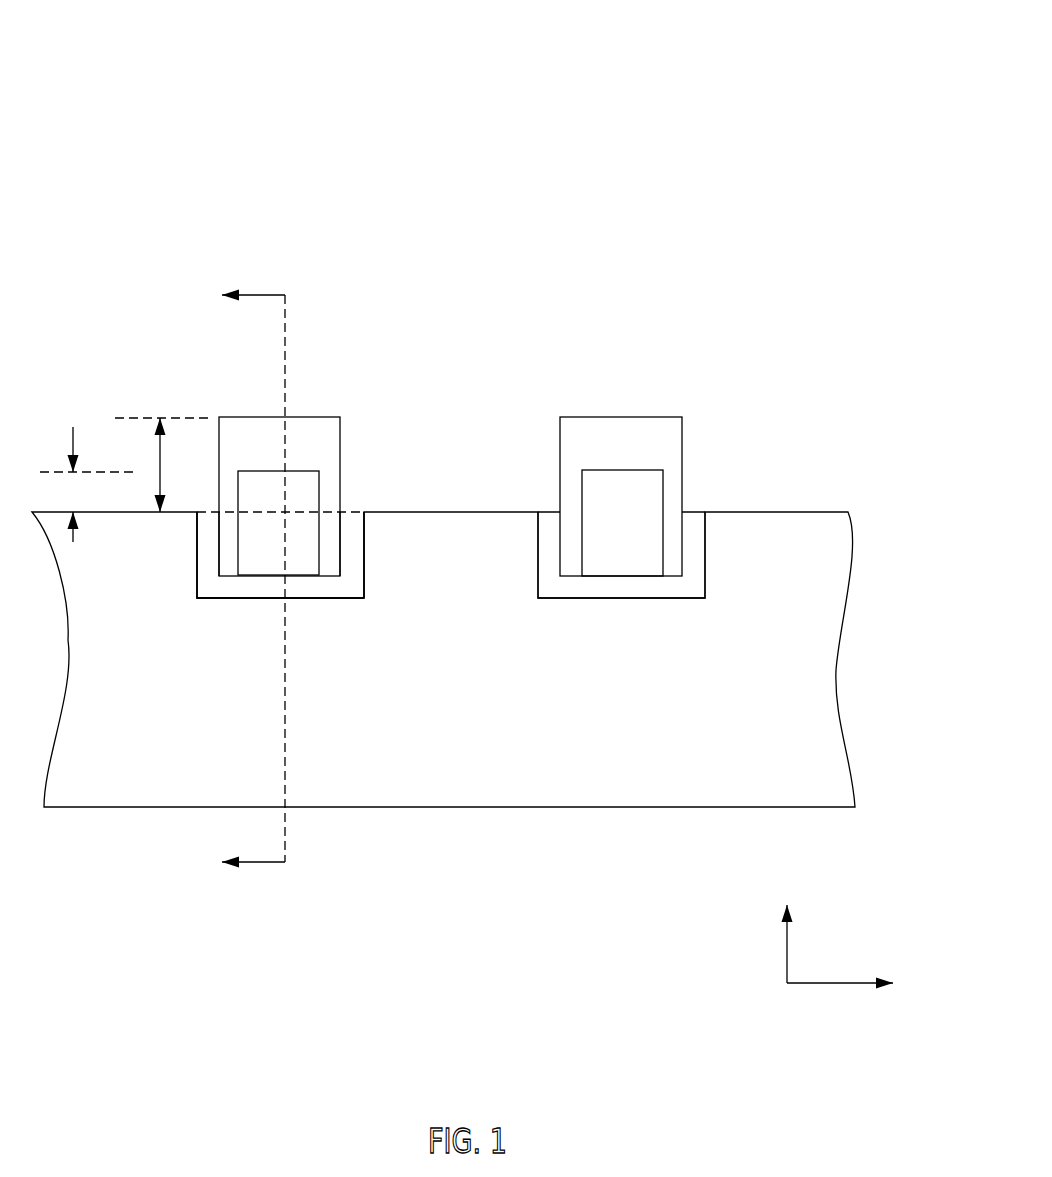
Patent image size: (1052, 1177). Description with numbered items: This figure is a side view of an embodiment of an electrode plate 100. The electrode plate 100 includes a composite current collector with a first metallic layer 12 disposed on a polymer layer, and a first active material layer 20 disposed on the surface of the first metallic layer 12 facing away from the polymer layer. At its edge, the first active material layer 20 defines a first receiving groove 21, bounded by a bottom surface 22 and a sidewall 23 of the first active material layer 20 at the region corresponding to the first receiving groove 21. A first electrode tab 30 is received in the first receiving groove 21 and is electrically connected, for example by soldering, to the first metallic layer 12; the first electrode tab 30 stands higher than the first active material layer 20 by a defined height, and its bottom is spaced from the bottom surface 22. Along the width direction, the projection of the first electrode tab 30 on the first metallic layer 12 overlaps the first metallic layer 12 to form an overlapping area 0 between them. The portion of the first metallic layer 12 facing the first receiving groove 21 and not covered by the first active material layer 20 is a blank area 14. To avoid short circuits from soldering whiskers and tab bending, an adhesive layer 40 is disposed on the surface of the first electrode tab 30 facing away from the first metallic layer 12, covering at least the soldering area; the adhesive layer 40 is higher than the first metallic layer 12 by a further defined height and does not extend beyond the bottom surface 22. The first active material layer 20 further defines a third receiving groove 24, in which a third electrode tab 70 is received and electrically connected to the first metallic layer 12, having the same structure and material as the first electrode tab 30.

The electrode plate 100 is at (138, 67).
The first active material layer 20 is at (488, 788).
The first electrode tab 30 is at (300, 440).
The adhesive layer 40 is at (307, 500).
The third electrode tab 70 is at (614, 457).
The third receiving groove 24 is at (690, 558).
The sidewall 23 is at (363, 567).
The bottom surface 22 is at (230, 592).
The first receiving groove 21 is at (348, 547).
The overlapping area 0 is at (250, 548).
The first metallic layer 12 is at (298, 588).
The blank area 14 is at (335, 582).